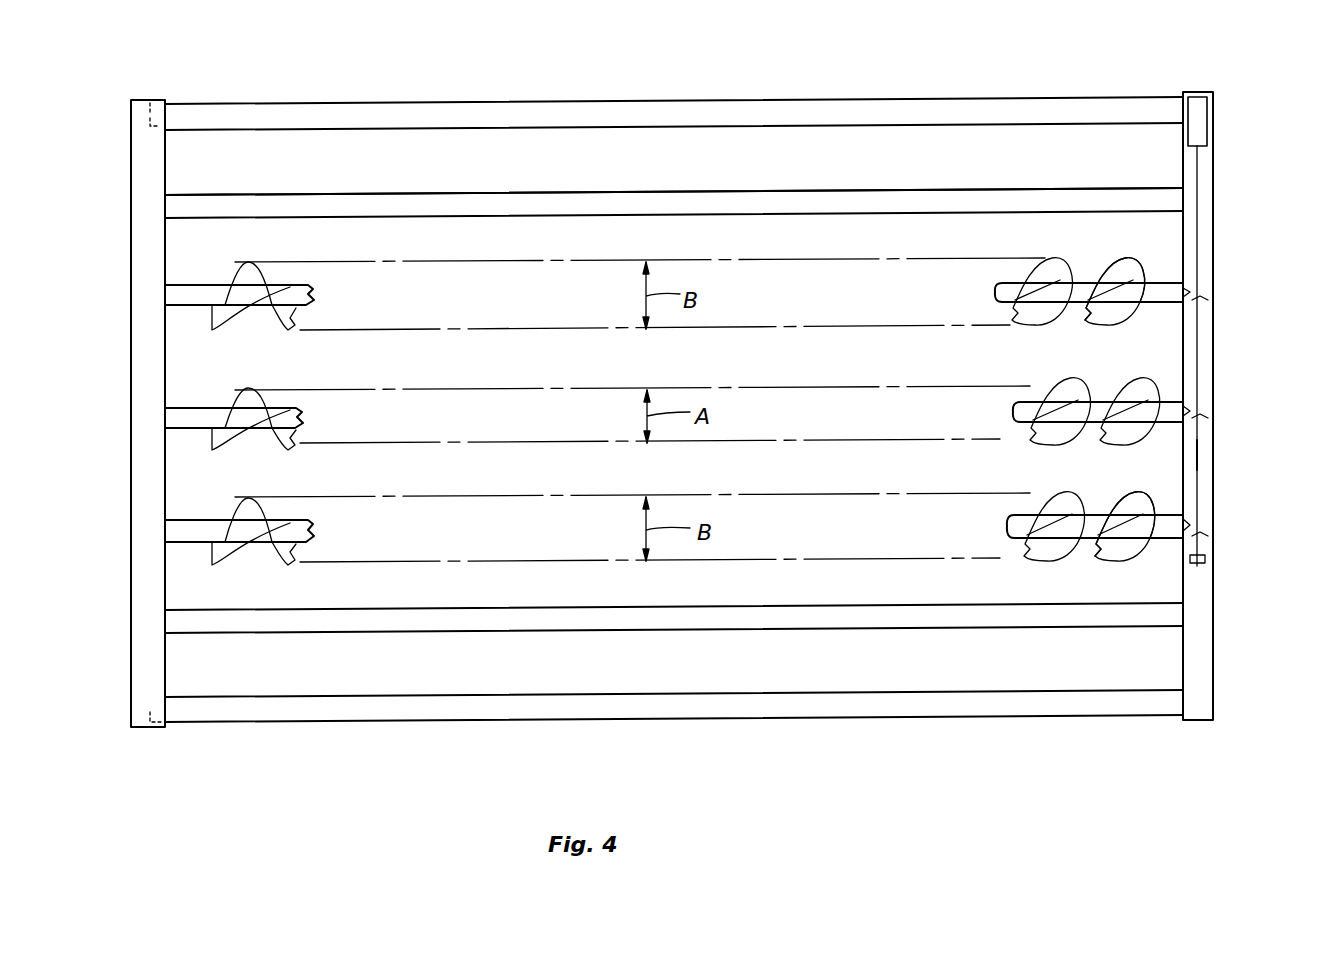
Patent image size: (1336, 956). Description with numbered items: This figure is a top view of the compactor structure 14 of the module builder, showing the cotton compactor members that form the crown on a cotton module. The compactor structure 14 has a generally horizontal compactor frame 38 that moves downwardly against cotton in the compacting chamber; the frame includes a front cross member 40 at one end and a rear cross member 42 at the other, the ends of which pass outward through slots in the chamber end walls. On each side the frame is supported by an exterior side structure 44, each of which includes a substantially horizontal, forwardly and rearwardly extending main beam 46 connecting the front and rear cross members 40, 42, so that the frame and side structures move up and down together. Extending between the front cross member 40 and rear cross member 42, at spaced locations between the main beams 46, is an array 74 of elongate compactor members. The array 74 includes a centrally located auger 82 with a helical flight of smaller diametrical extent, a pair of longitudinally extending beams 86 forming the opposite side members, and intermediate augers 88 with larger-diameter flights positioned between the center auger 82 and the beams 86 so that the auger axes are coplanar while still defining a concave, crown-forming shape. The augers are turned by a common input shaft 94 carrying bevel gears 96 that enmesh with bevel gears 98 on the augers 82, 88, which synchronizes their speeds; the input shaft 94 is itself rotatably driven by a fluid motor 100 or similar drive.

The compactor structure 14 is at (1256, 674).
The compactor frame 38 is at (1214, 718).
The front cross member 40 is at (128, 628).
The rear cross member 42 is at (1213, 523).
The exterior side structure 44 is at (290, 727).
The main beam 46 is at (762, 100).
The array of compactor members 74 is at (985, 192).
The center auger 82 is at (1130, 386).
The beam 86 is at (1200, 205).
The intermediate auger 88 is at (1147, 280).
The input shaft 94 is at (1205, 452).
The bevel gear 96 is at (1205, 297).
The bevel gear 98 is at (1192, 285).
The fluid motor 100 is at (1196, 96).